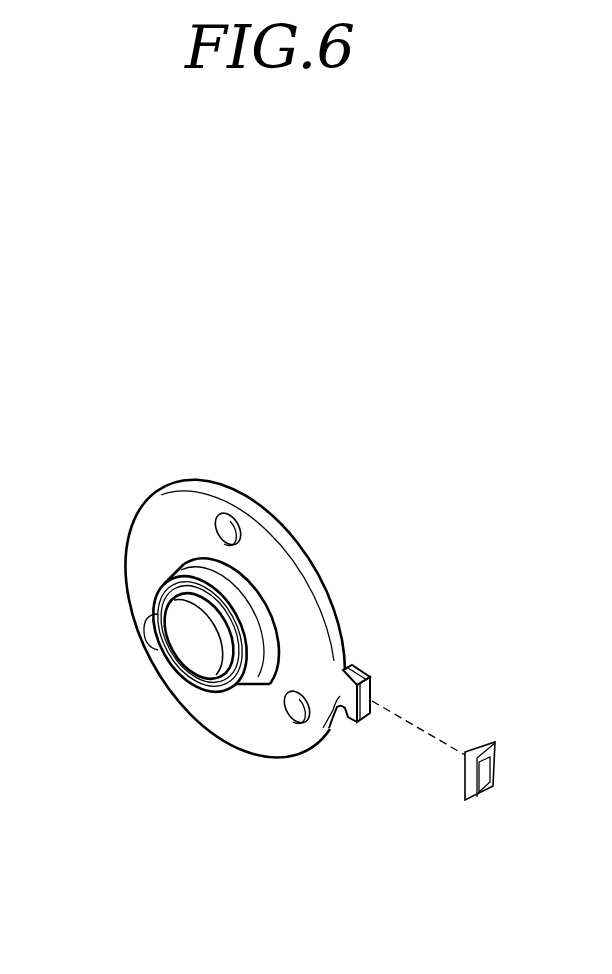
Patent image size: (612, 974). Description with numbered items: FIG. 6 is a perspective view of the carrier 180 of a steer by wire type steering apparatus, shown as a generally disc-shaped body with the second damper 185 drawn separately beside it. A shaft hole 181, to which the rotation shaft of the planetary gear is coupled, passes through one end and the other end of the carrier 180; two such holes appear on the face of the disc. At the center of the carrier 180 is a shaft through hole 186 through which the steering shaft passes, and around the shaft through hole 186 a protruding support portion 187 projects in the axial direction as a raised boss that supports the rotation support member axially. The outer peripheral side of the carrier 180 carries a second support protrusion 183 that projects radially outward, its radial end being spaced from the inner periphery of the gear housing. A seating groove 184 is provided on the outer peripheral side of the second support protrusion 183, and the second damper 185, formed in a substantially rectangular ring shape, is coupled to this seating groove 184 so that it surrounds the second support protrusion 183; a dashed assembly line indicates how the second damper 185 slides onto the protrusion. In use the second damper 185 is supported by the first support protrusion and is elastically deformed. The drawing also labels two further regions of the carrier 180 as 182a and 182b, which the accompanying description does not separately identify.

The carrier 180 is at (133, 437).
The shaft hole 181 is at (220, 512).
The flange front face edge 182a is at (290, 527).
The flange plate 182b is at (146, 572).
The second support protrusion 183 is at (337, 703).
The seating groove 184 is at (357, 662).
The second damper 185 is at (492, 738).
The shaft through hole 186 is at (196, 648).
The protruding support portion 187 is at (273, 683).